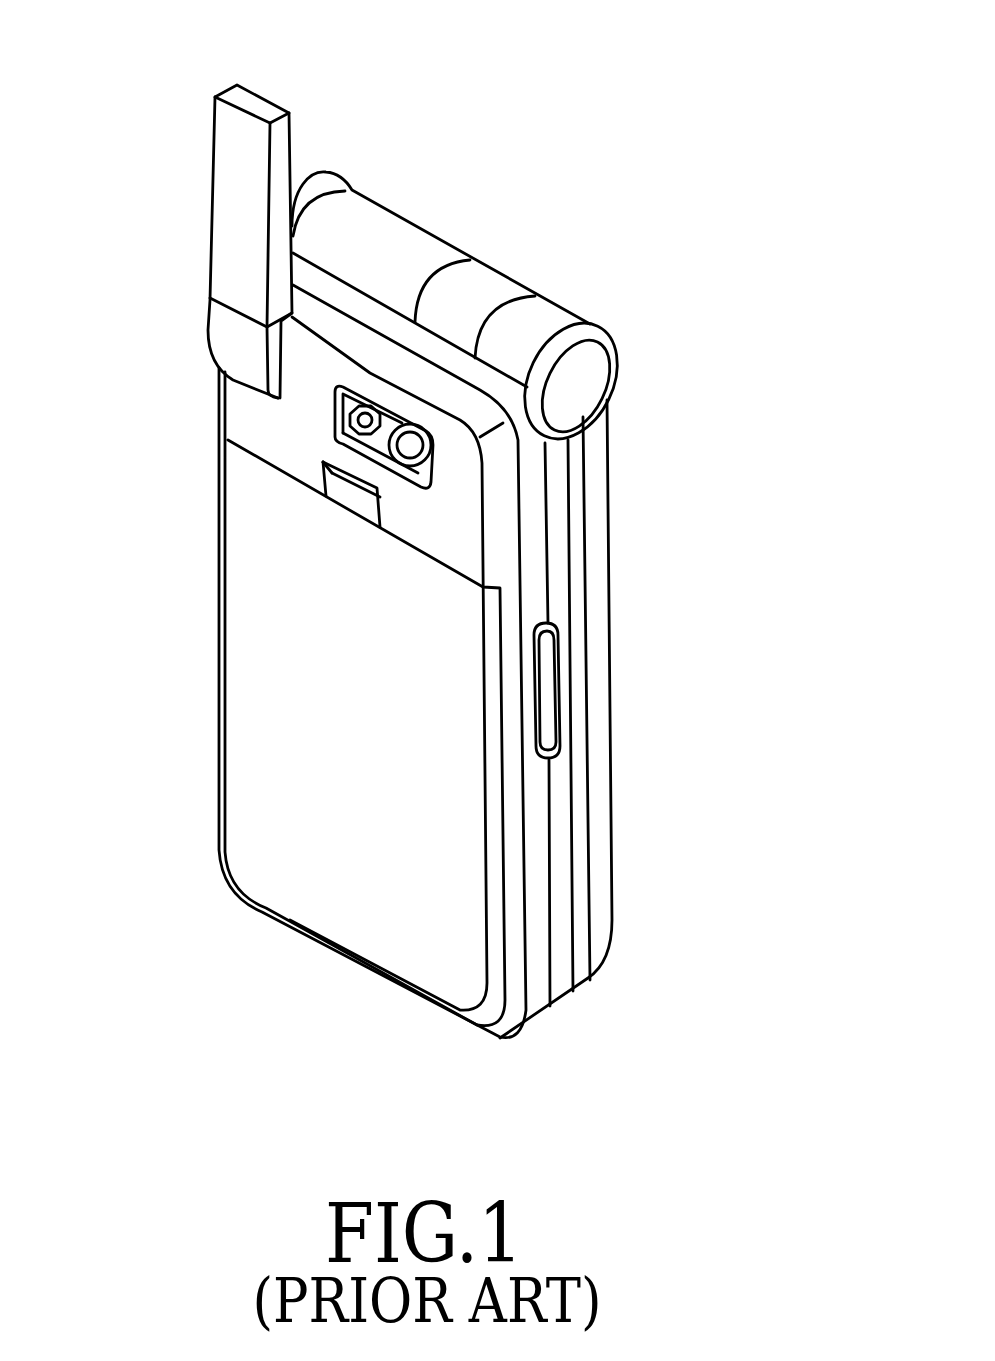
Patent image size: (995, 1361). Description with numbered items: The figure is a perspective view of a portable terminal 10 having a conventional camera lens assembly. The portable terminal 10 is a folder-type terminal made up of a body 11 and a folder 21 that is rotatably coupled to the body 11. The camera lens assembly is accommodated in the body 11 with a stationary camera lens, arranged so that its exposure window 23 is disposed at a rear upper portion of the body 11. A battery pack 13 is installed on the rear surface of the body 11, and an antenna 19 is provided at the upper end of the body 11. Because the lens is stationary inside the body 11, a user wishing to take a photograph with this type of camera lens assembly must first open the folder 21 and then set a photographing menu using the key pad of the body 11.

The portable terminal 10 is at (679, 34).
The body 11 is at (191, 612).
The battery pack 13 is at (250, 790).
The antenna 19 is at (233, 229).
The folder 21 is at (650, 618).
The exposure window 23 is at (412, 430).